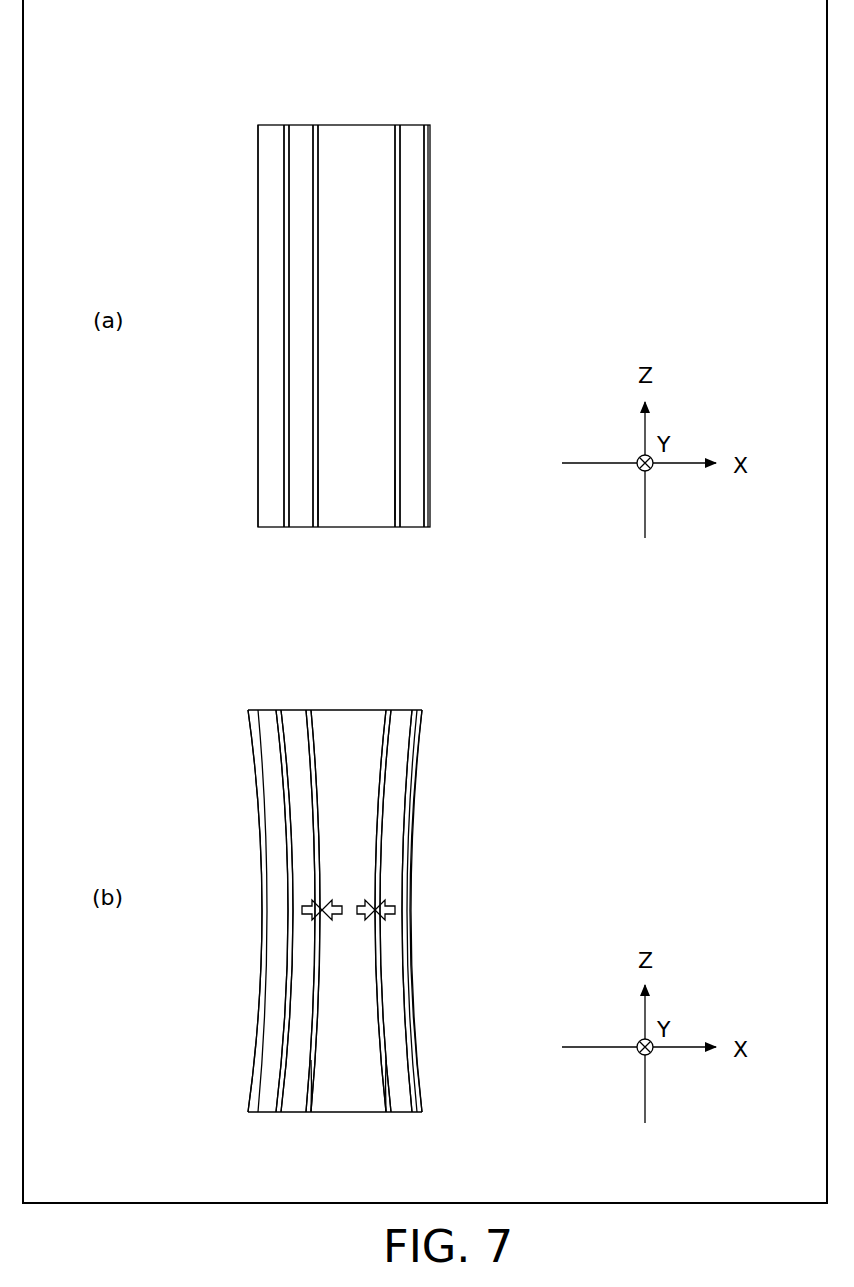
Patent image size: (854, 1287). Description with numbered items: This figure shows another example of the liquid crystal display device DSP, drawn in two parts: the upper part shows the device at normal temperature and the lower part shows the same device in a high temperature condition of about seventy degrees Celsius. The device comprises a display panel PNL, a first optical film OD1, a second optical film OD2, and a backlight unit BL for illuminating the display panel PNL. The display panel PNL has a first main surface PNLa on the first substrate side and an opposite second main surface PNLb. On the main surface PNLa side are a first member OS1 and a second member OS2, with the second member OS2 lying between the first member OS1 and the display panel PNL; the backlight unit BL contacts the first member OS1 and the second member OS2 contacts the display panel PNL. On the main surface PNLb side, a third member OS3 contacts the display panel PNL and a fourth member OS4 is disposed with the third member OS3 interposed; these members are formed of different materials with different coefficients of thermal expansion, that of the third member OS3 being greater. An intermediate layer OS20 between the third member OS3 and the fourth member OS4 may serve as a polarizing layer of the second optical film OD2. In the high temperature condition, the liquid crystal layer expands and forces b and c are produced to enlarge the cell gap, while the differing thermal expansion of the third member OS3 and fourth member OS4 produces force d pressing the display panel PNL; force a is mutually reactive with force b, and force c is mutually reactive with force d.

The liquid crystal display device DSP is at (500, 83).
The backlight unit BL is at (268, 132).
The first member OS1 is at (286, 125).
The second member OS2 is at (316, 125).
The third member OS3 is at (398, 125).
The fourth member OS4 is at (427, 125).
The first optical film OD1 is at (300, 110).
The second optical film OD2 is at (411, 110).
The display panel PNL is at (358, 136).
The intermediate layer OS20 is at (415, 297).
The first main surface PNLa is at (302, 495).
The second main surface PNLb is at (409, 495).
The force a is at (312, 924).
The force b is at (332, 924).
The force c is at (366, 924).
The force d is at (388, 924).